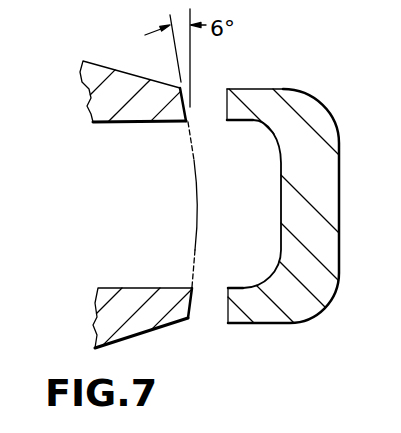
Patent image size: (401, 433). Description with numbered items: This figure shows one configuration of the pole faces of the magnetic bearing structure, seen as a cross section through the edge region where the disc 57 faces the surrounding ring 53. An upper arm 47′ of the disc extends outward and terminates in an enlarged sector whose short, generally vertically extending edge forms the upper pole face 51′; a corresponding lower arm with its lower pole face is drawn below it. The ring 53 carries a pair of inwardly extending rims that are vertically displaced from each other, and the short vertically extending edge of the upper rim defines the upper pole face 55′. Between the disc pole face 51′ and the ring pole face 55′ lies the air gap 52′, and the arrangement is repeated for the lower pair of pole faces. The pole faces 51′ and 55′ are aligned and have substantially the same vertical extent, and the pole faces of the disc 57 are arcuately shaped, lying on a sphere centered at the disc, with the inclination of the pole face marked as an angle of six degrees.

The arm 47′ is at (103, 122).
The upper pole face 51′ is at (186, 106).
The air gap 52′ is at (208, 100).
The ring member 53 is at (332, 195).
The upper pole face 55′ is at (226, 108).
The disc 57 is at (103, 198).